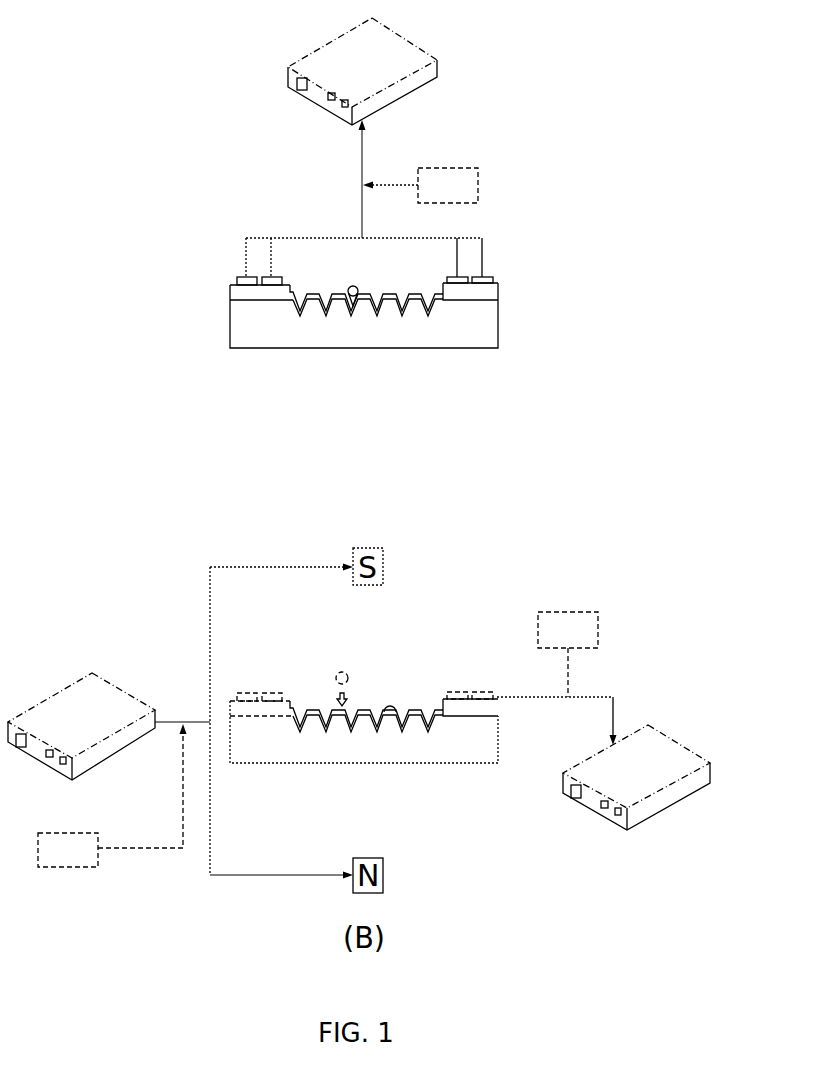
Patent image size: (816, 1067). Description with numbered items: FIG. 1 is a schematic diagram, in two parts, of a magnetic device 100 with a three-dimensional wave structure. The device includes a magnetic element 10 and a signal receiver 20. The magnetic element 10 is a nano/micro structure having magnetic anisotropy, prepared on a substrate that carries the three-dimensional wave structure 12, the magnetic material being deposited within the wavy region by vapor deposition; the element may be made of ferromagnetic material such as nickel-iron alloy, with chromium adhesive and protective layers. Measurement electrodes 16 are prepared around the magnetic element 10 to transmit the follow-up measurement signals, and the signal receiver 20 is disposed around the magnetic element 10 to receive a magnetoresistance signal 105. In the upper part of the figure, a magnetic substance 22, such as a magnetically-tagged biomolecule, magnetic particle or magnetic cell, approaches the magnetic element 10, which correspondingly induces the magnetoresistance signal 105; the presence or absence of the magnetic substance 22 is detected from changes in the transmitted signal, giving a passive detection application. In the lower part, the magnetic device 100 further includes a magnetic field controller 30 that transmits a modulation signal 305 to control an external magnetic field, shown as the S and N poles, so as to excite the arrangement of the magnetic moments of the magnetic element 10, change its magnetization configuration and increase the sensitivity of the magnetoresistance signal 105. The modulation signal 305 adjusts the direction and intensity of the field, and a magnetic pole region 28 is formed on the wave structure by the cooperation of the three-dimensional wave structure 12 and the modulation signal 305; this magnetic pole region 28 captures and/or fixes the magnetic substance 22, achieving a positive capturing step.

The magnetic device 100 is at (236, 136).
The magnetic element 10 is at (438, 321).
The three-dimensional wave structure 12 is at (368, 306).
The measurement electrodes 16 is at (237, 277).
The signal receiver 20 is at (396, 56).
The magnetic substance 22 is at (351, 285).
The magnetic pole region 28 is at (393, 705).
The magnetic field controller 30 is at (86, 699).
The magnetoresistance signal 105 is at (490, 455).
The modulation signal 305 is at (112, 796).